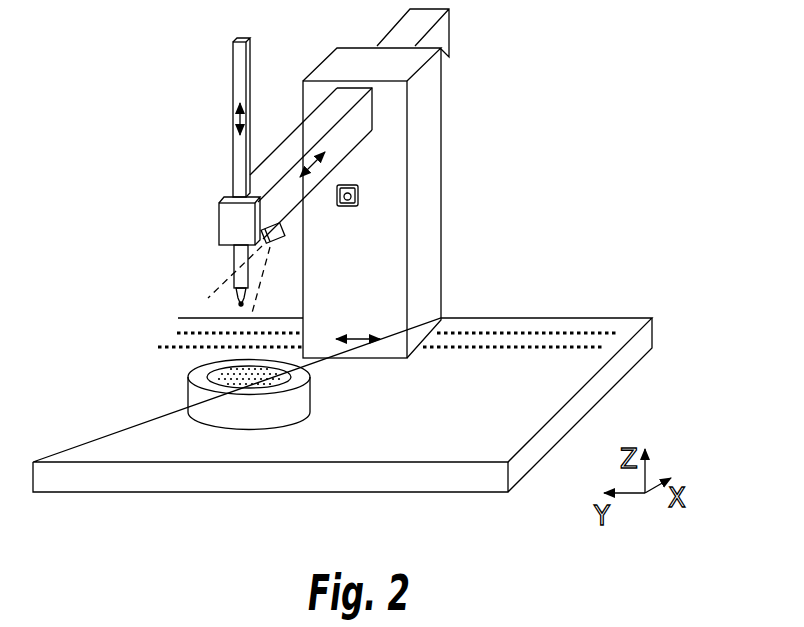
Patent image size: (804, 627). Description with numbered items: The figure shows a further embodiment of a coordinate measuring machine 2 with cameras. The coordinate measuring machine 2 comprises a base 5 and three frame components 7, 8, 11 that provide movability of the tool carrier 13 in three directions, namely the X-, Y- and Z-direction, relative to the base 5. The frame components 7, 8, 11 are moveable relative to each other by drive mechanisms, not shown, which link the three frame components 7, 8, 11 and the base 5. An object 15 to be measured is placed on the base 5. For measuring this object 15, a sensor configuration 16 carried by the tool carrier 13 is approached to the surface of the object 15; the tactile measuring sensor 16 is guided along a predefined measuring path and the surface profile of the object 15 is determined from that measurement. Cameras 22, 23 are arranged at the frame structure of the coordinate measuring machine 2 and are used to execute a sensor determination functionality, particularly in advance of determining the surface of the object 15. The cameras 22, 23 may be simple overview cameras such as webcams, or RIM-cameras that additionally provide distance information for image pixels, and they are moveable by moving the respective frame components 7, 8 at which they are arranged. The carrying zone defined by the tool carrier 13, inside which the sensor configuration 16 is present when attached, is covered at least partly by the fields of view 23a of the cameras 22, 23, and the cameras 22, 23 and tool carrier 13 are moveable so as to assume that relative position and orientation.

The coordinate measuring machine 2 is at (342, 250).
The base 5 is at (342, 389).
The frame component 7 is at (399, 183).
The frame component 8 is at (311, 163).
The frame component 11 is at (202, 141).
The tool carrier 13 is at (196, 275).
The object 15 is at (191, 389).
The sensor configuration 16 is at (174, 309).
The camera 22 is at (422, 188).
The camera 23 is at (384, 225).
The field of view 23a is at (365, 279).